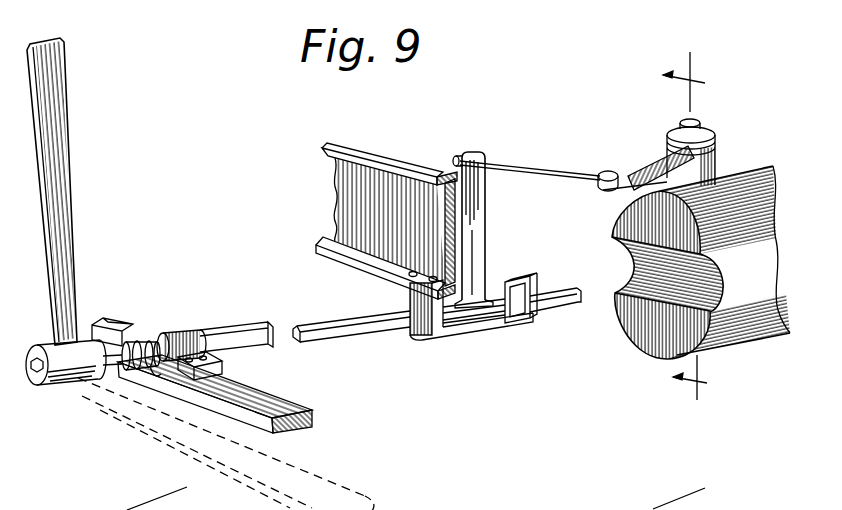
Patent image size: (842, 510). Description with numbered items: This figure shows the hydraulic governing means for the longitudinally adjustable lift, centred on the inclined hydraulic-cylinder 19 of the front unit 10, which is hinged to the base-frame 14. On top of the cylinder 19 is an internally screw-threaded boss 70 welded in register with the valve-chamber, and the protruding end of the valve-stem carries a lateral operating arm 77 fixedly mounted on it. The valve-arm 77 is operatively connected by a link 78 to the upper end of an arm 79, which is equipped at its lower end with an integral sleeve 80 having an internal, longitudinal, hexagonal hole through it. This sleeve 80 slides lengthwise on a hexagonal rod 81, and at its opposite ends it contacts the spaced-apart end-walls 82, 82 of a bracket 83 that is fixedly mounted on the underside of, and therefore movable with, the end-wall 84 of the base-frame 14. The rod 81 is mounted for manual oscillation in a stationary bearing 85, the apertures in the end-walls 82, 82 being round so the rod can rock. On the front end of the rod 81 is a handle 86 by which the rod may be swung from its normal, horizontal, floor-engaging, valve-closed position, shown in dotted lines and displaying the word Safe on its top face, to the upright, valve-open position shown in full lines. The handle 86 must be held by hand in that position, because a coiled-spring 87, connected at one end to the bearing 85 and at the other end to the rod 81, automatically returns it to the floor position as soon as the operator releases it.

The front unit 10 is at (697, 111).
The base-frame 14 is at (357, 152).
The hydraulic-cylinder 19 is at (722, 257).
The boss 70 is at (717, 168).
The operating arm 77 is at (662, 164).
The link 78 is at (545, 170).
The arm 79 is at (474, 209).
The sleeve 80 is at (468, 322).
The hexagonal rod 81 is at (390, 333).
The end-walls 82 is at (415, 292).
The bracket 83 is at (497, 327).
The end-wall 84 is at (348, 203).
The stationary bearing 85 is at (180, 330).
The handle 86 is at (58, 79).
The coiled-spring 87 is at (136, 342).